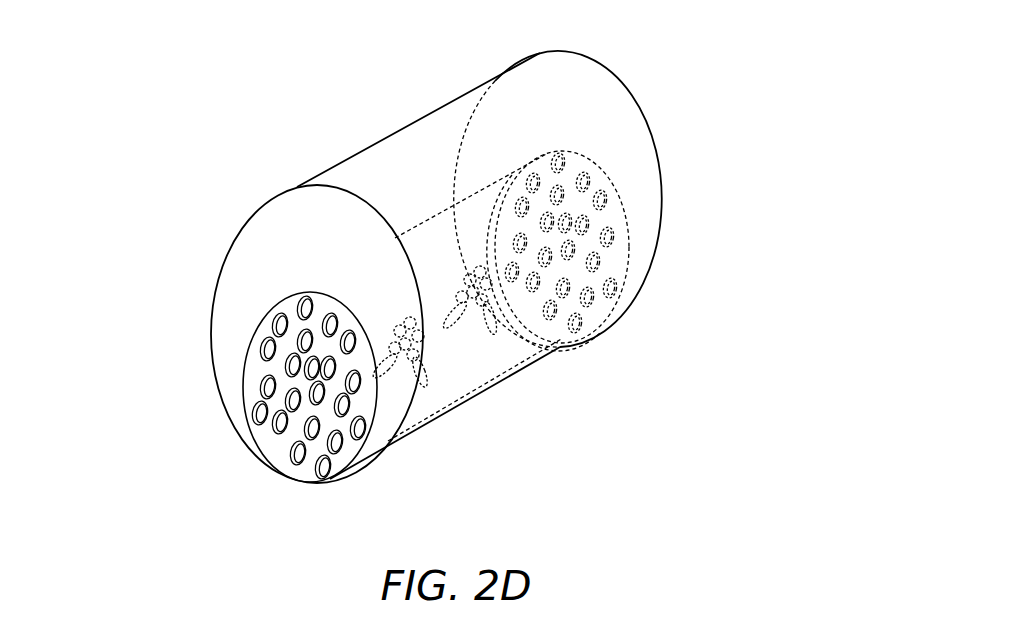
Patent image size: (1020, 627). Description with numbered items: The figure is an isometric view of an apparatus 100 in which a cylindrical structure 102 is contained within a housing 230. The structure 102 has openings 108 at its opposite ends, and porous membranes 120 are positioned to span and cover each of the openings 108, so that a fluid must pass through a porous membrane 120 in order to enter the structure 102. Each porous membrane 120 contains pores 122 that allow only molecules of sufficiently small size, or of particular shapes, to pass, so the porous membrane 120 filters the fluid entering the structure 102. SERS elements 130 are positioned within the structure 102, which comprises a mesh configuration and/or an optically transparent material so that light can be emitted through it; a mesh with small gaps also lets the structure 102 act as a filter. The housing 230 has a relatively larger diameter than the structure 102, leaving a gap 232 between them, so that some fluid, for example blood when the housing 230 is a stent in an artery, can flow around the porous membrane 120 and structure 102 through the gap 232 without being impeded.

The apparatus 100 is at (194, 71).
The housing 230 is at (410, 124).
The opening 108 is at (637, 417).
The gap 232 is at (257, 259).
The pore 122 is at (683, 127).
The porous membrane 120 is at (250, 442).
The structure 102 is at (426, 434).
The SERS elements 130 is at (444, 364).